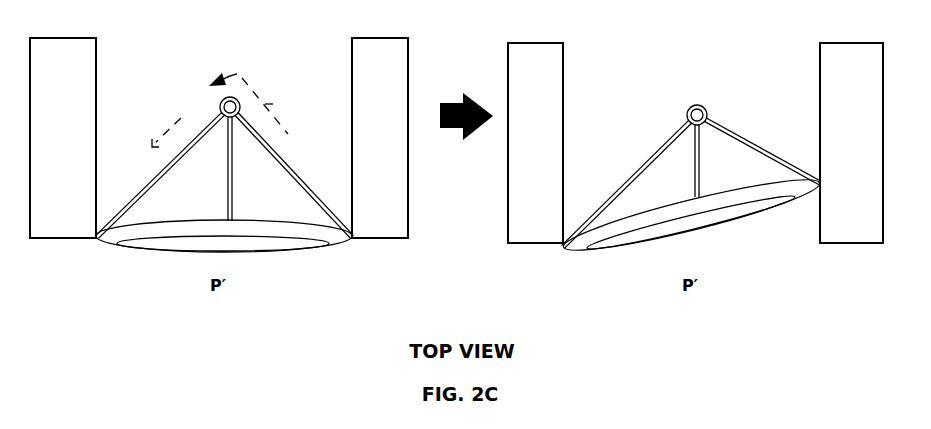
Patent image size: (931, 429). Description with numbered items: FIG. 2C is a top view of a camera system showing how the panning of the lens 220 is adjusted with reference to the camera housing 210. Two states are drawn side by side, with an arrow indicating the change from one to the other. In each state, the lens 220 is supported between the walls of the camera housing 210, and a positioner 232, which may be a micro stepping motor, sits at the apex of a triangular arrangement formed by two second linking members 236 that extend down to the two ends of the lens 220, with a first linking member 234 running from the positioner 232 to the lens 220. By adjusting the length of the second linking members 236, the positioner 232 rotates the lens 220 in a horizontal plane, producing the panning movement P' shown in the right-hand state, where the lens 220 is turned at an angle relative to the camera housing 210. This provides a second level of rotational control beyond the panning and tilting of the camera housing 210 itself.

The camera housing 210 is at (456, 140).
The lens 220 is at (290, 246).
The positioner 232 is at (229, 96).
The first linking members 234 is at (713, 157).
The second linking members 236 is at (180, 152).